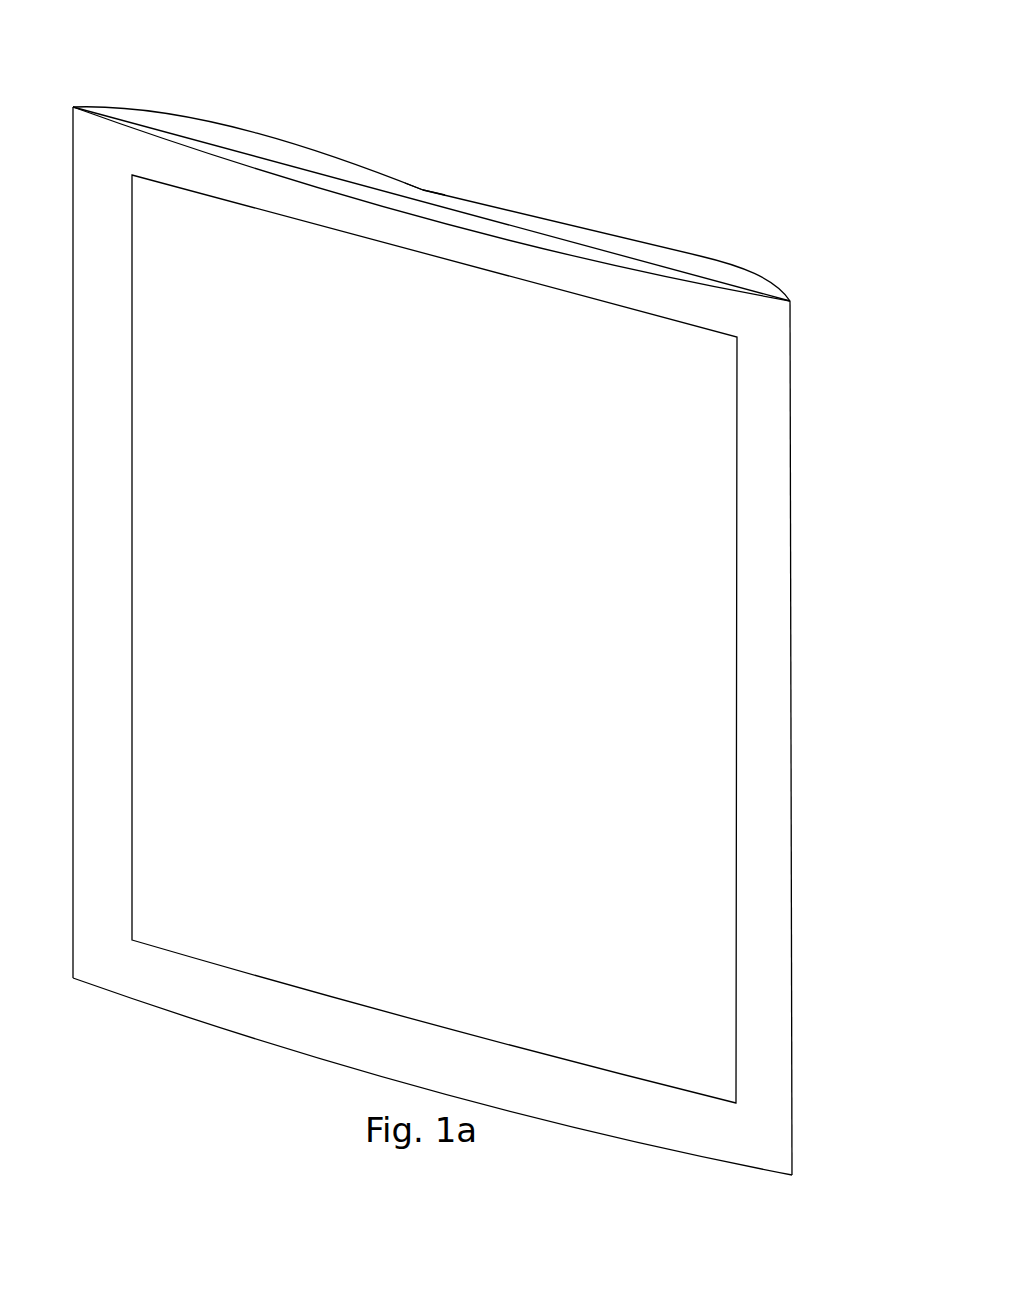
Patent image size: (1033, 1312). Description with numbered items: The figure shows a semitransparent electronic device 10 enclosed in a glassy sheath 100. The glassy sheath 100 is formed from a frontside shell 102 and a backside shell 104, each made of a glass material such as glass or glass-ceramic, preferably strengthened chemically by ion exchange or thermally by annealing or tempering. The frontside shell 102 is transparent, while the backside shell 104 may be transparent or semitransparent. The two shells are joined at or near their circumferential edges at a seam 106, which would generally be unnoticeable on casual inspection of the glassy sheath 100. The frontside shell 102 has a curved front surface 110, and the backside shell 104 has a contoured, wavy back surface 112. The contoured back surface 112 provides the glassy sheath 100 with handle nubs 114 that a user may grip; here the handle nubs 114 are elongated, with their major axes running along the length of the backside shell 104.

The semitransparent electronic device 10 is at (135, 78).
The glassy sheath 100 is at (510, 203).
The frontside shell 102 is at (85, 122).
The backside shell 104 is at (318, 160).
The seam 106 is at (757, 292).
The curved front surface 110 is at (423, 228).
The contoured back surface 112 is at (612, 232).
The handle nubs 114 is at (235, 125).